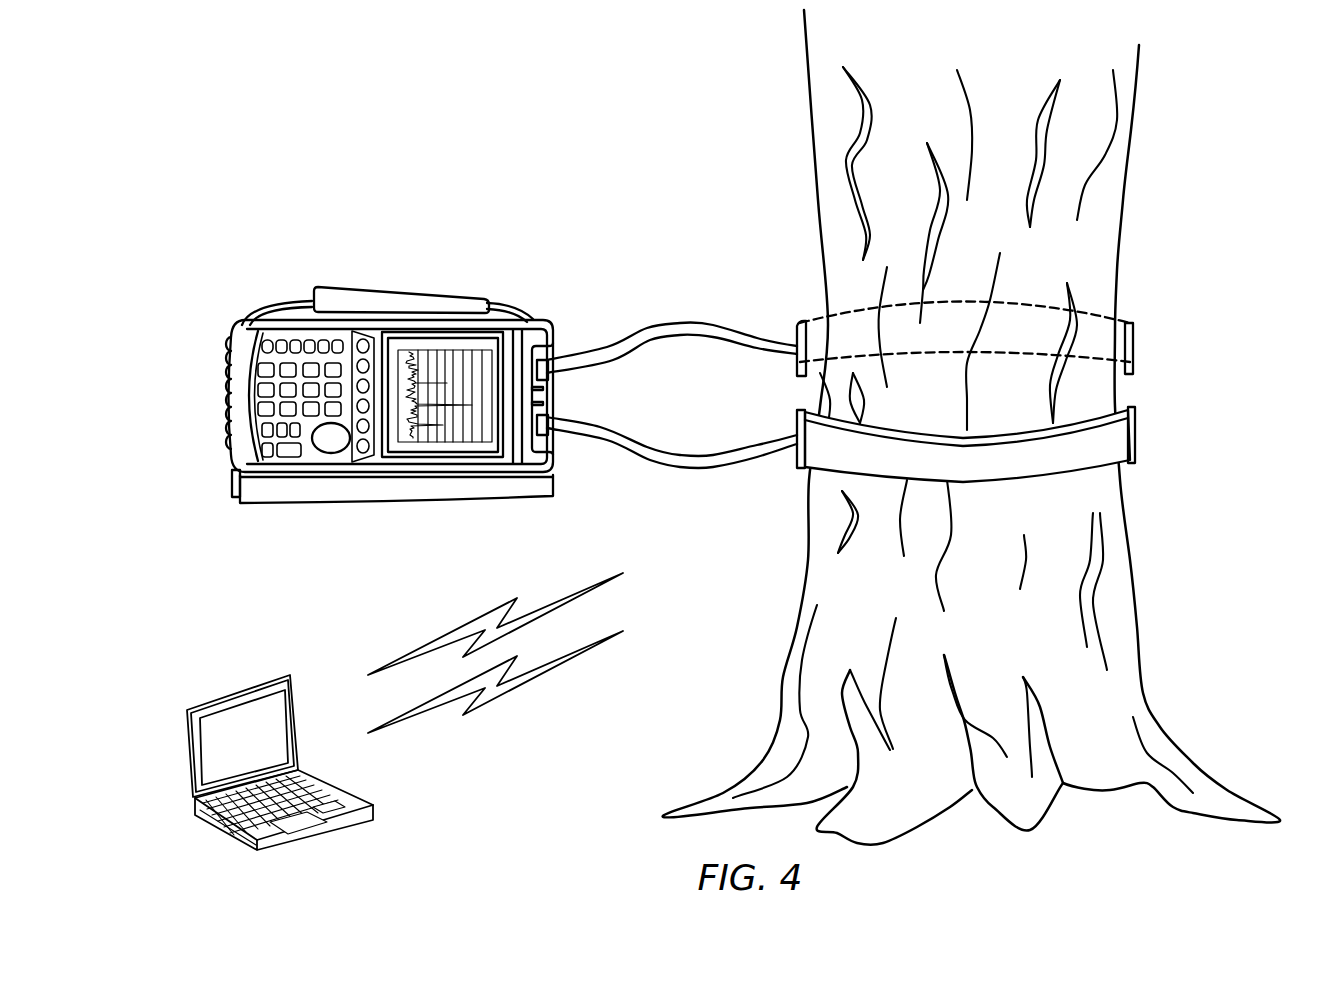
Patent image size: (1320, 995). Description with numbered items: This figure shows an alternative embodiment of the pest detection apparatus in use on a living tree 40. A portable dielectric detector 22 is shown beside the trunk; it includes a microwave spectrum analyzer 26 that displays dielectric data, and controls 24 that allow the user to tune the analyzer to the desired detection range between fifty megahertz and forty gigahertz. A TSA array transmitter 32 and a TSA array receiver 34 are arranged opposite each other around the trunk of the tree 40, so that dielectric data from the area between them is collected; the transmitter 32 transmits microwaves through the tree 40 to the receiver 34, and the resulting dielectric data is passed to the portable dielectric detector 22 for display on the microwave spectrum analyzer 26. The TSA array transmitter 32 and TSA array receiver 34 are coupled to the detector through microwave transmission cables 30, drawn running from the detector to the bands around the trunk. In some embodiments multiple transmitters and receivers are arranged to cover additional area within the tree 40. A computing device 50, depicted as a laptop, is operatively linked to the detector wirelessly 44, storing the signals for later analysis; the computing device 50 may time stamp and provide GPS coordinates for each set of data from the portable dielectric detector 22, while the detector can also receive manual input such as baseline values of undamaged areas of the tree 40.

The portable dielectric detector 22 is at (376, 387).
The controls 24 is at (307, 458).
The microwave spectrum analyzer 26 is at (462, 363).
The microwave transmission cables 30 is at (681, 323).
The TSA array transmitter 32 is at (988, 470).
The TSA array receiver 34 is at (1020, 302).
The tree 40 is at (823, 213).
The wireless link 44 is at (523, 687).
The computing device 50 is at (207, 705).